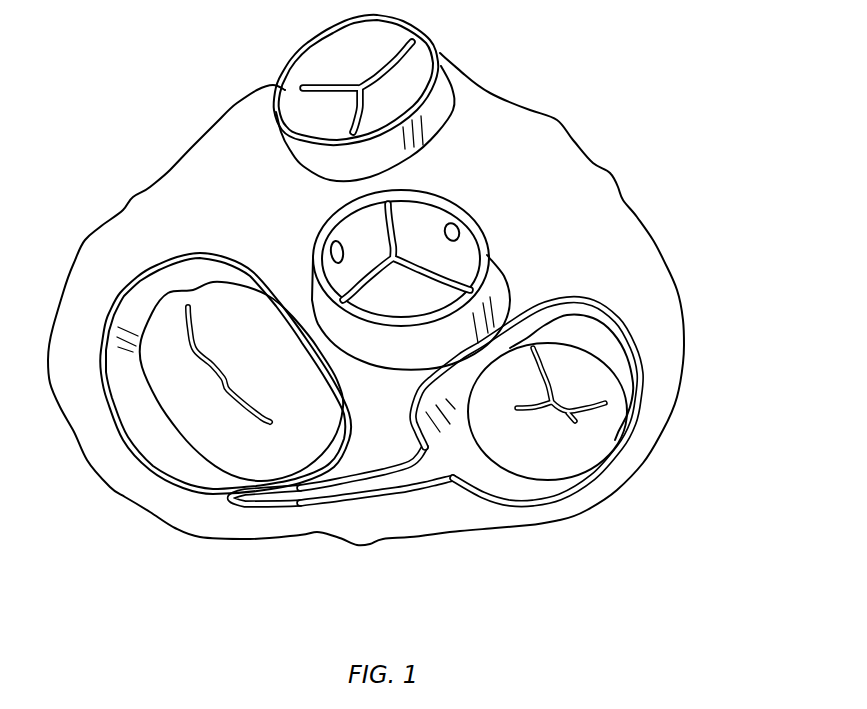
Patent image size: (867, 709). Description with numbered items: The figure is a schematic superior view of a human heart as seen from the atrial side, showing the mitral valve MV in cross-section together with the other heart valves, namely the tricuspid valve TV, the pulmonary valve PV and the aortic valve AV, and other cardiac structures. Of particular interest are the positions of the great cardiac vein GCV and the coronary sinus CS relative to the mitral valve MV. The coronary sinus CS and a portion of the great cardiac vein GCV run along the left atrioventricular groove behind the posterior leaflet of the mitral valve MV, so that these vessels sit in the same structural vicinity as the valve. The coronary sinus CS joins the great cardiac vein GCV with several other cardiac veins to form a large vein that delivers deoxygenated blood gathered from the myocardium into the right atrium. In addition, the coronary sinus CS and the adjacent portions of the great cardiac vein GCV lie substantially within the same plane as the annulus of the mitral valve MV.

The pulmonary valve PV is at (300, 118).
The aortic valve AV is at (420, 218).
The mitral valve MV is at (163, 342).
The tricuspid valve TV is at (593, 385).
The great cardiac vein GCV is at (197, 490).
The coronary sinus CS is at (340, 490).